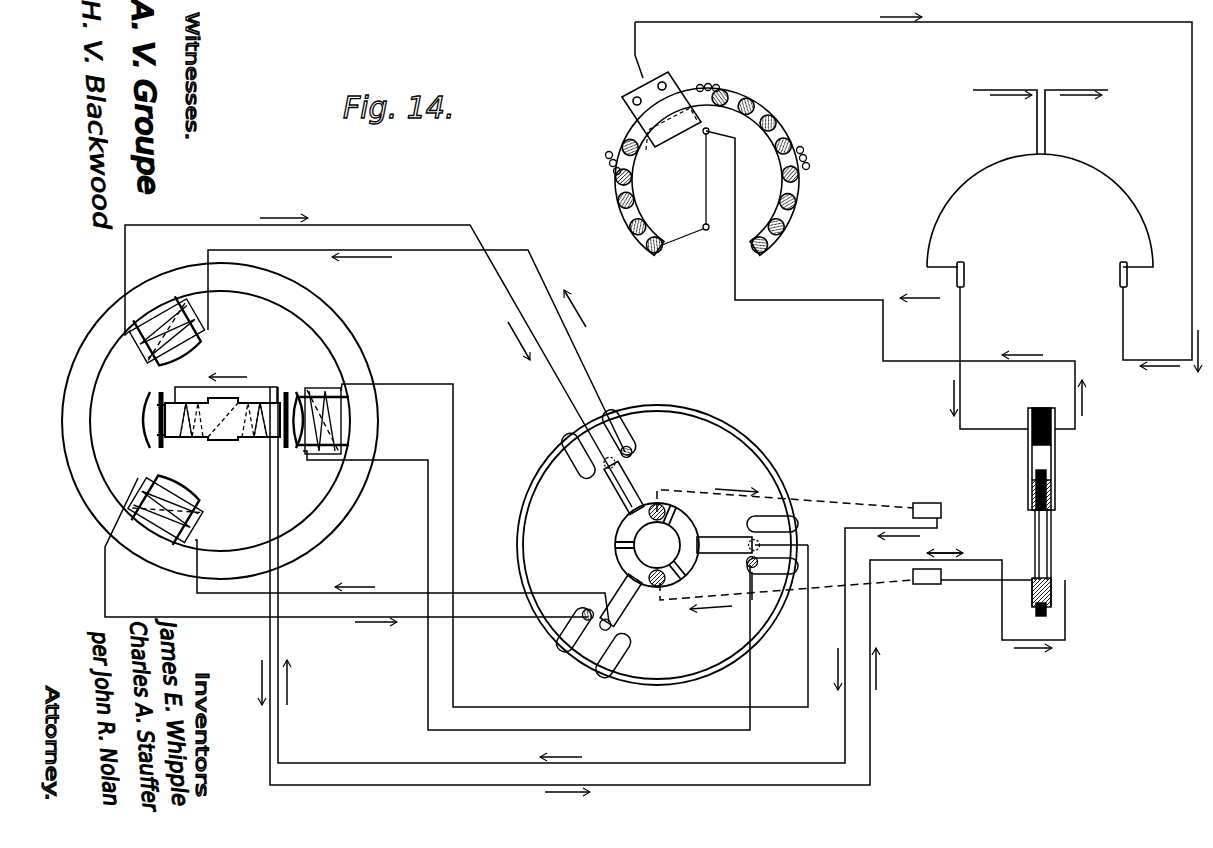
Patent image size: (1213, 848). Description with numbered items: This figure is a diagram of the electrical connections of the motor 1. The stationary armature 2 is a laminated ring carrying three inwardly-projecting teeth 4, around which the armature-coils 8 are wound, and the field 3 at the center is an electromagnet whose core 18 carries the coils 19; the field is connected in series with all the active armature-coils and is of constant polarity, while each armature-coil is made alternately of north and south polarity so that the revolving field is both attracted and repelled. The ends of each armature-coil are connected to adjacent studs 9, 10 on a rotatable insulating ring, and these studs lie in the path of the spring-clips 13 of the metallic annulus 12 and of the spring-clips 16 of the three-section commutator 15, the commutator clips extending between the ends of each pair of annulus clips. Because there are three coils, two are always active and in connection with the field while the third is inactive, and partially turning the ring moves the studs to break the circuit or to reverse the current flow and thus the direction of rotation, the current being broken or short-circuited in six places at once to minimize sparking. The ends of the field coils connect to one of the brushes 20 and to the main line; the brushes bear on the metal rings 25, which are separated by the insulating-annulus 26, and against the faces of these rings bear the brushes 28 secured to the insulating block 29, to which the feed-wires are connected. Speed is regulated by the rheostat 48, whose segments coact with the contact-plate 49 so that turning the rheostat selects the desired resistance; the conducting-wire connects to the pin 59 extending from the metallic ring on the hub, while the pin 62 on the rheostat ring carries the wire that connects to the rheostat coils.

The motor 1 is at (215, 421).
The armature 2 is at (105, 330).
The field 3 is at (222, 441).
The teeth 4 is at (210, 340).
The armature-coils 8 is at (144, 354).
The stud 9 is at (633, 455).
The stud 10 is at (602, 467).
The metallic annulus 12 is at (752, 450).
The spring-clips 13 is at (566, 438).
The commutator 15 is at (618, 558).
The spring-clips 16 is at (620, 498).
The core 18 is at (187, 441).
The coils 19 is at (253, 441).
The brushes 20 is at (660, 502).
The metal rings 25 is at (1034, 529).
The insulating-annulus 26 is at (1052, 510).
The brushes 28 is at (1030, 459).
The block 29 is at (1043, 444).
The rheostat 48 is at (618, 223).
The contact-plate 49 is at (620, 100).
The pin 59 is at (703, 134).
The pin 62 is at (706, 231).